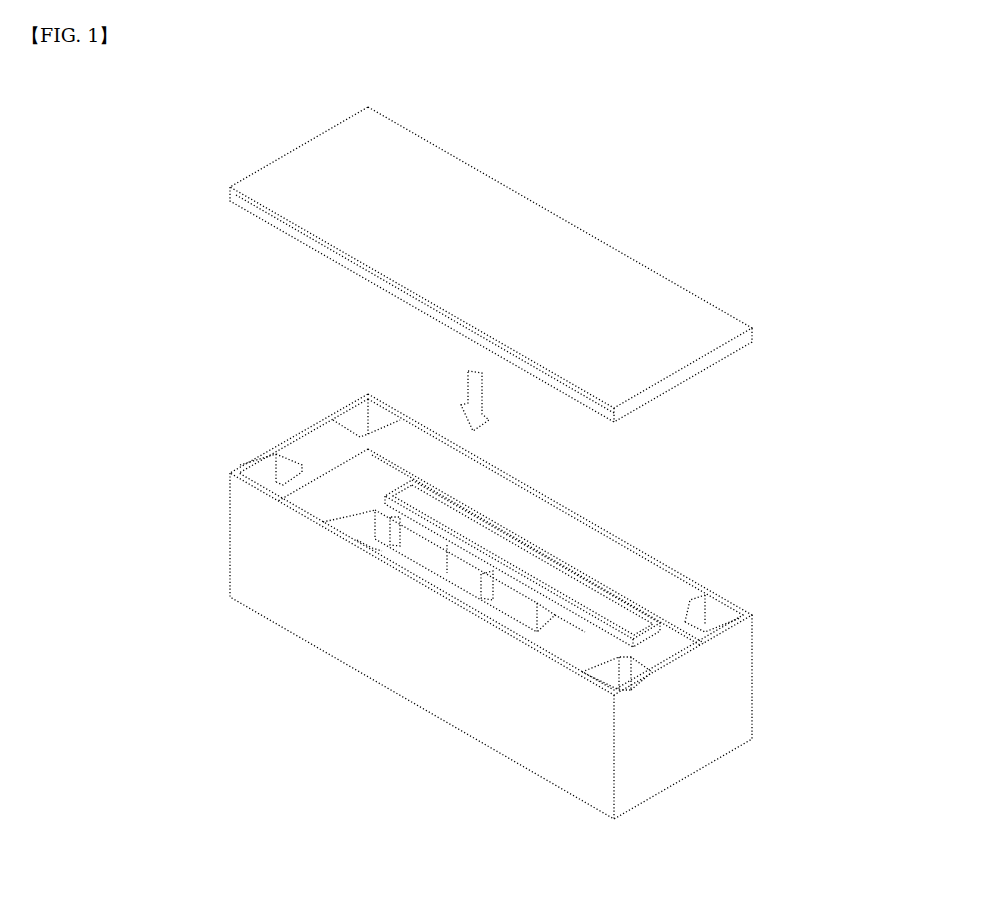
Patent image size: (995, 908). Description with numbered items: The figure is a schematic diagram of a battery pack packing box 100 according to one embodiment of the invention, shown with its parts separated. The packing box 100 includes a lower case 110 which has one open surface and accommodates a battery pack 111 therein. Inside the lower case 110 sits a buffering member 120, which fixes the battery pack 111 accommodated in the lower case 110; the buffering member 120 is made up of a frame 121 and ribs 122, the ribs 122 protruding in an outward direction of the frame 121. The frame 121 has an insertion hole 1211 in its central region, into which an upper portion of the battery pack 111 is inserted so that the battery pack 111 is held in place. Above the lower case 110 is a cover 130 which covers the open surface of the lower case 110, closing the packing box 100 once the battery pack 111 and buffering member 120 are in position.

The battery pack packing box 100 is at (148, 153).
The lower case 110 is at (755, 688).
The battery pack 111 is at (757, 621).
The buffering member 120 is at (462, 590).
The frame 121 is at (543, 546).
The insertion hole 1211 is at (627, 598).
The ribs 122 is at (276, 470).
The cover 130 is at (755, 330).